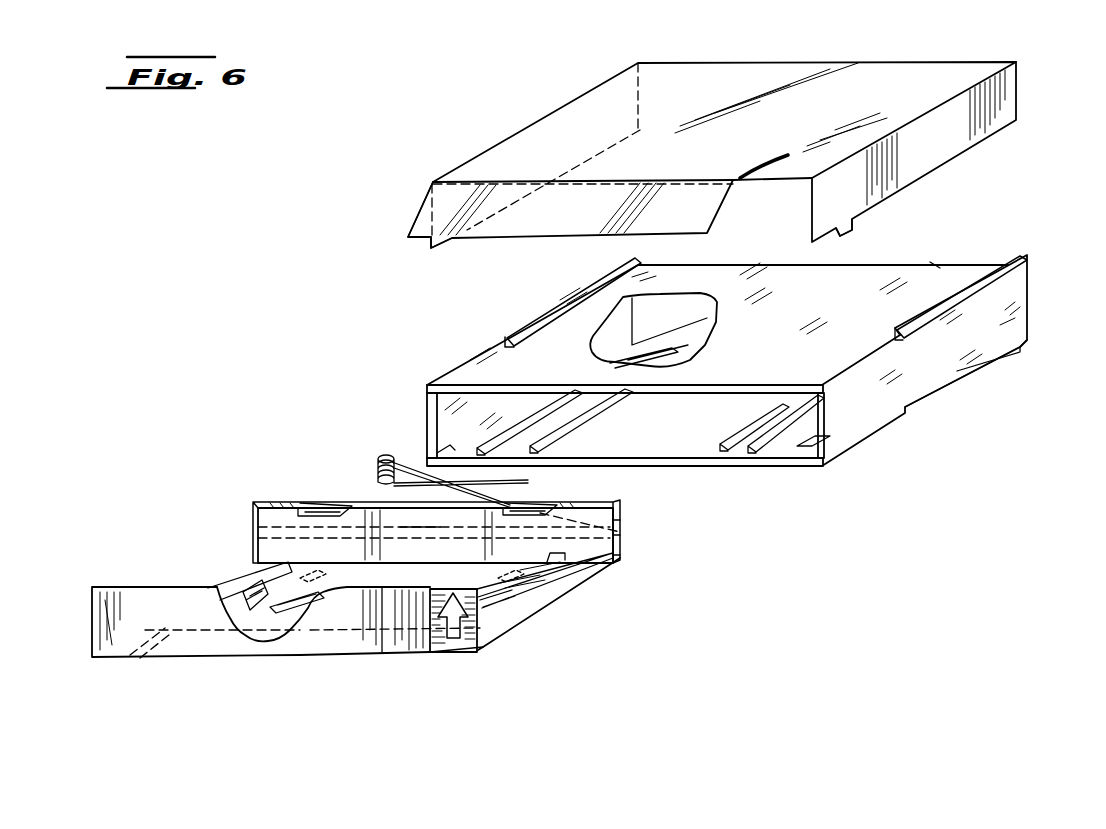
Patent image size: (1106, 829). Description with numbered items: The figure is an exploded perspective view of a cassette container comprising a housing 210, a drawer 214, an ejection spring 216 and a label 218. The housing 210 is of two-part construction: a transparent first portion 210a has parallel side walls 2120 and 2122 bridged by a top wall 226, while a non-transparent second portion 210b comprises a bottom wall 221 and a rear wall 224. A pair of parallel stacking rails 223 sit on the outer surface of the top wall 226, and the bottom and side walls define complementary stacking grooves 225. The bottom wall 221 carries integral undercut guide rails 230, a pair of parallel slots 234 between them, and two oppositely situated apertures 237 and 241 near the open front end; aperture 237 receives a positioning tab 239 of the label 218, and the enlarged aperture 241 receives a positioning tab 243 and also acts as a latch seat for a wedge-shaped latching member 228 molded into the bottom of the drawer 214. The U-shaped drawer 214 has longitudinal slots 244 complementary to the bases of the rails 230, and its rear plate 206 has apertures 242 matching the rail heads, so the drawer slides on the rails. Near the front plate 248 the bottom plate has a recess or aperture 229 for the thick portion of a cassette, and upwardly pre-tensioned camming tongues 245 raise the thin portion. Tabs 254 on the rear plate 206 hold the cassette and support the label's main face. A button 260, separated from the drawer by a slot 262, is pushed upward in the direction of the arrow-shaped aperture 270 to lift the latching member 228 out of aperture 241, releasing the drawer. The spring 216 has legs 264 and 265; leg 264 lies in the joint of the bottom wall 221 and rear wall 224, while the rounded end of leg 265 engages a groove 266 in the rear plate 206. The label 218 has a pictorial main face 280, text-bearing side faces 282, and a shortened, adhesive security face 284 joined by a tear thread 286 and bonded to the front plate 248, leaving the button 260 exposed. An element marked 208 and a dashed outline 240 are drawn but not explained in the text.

The rear plate 206 is at (435, 501).
The tab 208 is at (250, 596).
The housing 210 is at (722, 367).
The first portion of housing 210a is at (457, 381).
The second portion of housing 210b is at (738, 468).
The side wall 2120 is at (430, 410).
The side wall 2122 is at (1015, 297).
The drawer 214 is at (362, 633).
The ejection spring 216 is at (419, 467).
The label 218 is at (724, 160).
The bottom wall 221 is at (665, 445).
The stacking rails 223 is at (520, 325).
The rear wall 224 is at (652, 313).
The stacking grooves 225 is at (1015, 347).
The top wall 226 is at (935, 275).
The latching member 228 is at (490, 643).
The recess or aperture 229 is at (368, 650).
The guide rails 230 is at (548, 408).
The slots 234 is at (585, 418).
The aperture 237 is at (455, 448).
The positioning tab 239 is at (460, 250).
The slot (hidden) 240 is at (316, 572).
The aperture 241 is at (820, 441).
The apertures 242 is at (612, 560).
The positioning tab 243 is at (850, 232).
The longitudinal slots 244 is at (560, 590).
The camming tongues 245 is at (305, 605).
The front plate 248 is at (140, 605).
The tabs 254 is at (322, 504).
The button 260 is at (472, 650).
The slot 262 is at (510, 610).
The spring leg 264 is at (423, 485).
The spring leg 265 is at (386, 456).
The groove 266 is at (620, 527).
The arrow-shaped aperture 270 is at (441, 622).
The main face 280 is at (720, 82).
The side faces 282 is at (510, 166).
The security face 284 is at (553, 212).
The tear thread 286 is at (778, 165).